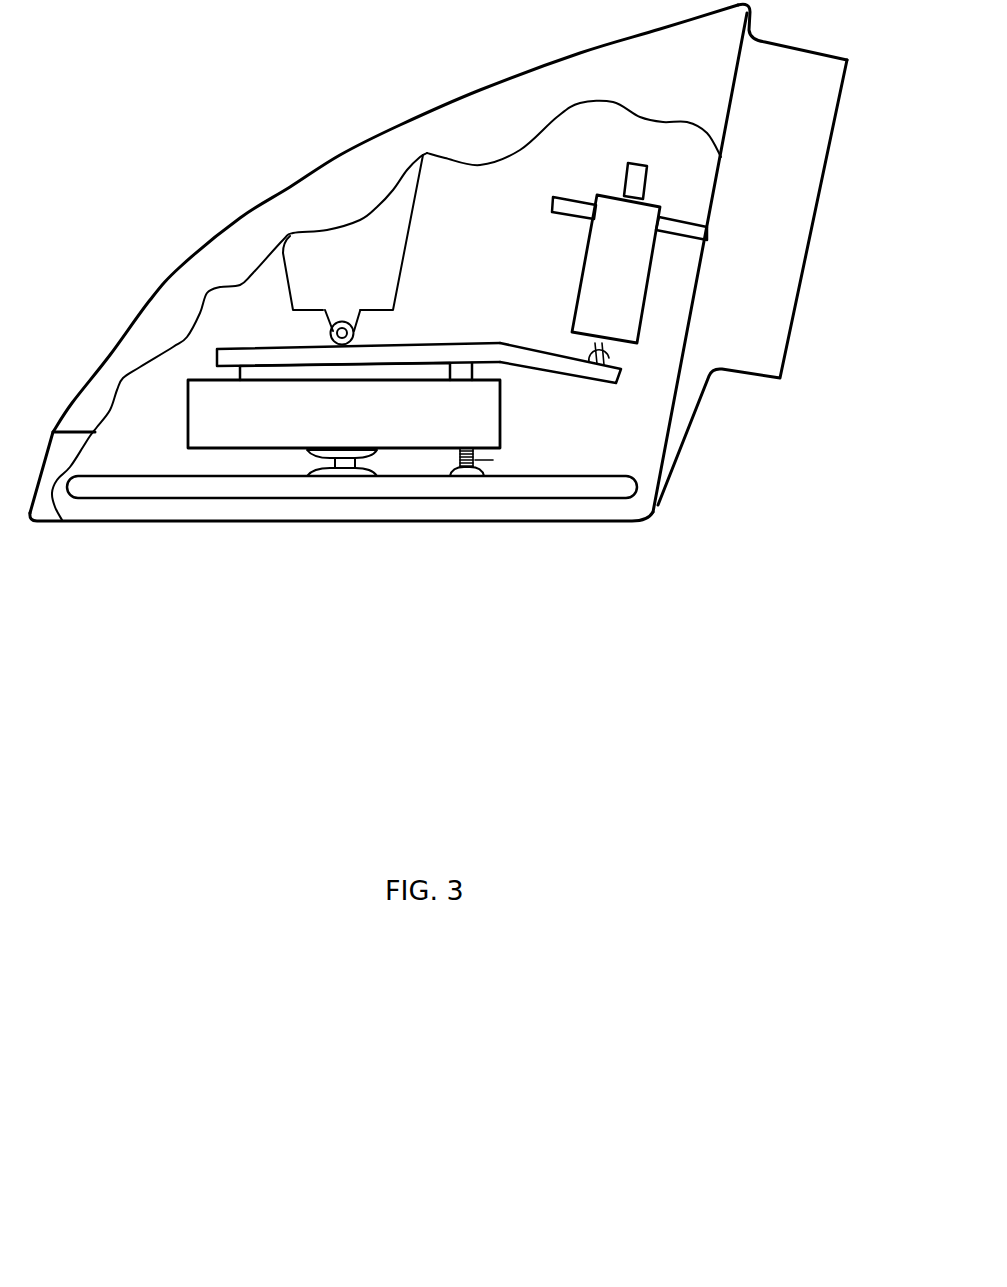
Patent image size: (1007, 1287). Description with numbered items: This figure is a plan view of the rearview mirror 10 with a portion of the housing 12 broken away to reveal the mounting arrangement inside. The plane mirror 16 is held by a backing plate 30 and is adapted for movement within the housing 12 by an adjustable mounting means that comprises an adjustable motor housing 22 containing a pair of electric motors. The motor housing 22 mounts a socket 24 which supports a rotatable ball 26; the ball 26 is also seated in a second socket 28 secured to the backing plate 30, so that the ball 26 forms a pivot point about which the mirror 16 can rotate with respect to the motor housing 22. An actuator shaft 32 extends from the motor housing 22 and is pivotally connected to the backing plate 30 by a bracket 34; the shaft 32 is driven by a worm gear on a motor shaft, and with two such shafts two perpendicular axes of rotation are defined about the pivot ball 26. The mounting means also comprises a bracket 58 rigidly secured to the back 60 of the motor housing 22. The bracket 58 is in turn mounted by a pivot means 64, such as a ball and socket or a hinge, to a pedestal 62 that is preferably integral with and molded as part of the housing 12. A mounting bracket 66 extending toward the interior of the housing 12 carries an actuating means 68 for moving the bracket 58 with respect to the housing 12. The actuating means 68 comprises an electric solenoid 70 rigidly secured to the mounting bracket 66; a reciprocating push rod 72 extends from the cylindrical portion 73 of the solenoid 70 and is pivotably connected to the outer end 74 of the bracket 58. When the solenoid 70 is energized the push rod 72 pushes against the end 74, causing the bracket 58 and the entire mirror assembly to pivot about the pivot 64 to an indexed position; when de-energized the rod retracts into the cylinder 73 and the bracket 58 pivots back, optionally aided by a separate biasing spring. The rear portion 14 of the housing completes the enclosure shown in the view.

The garment steamer/press appliance 10 is at (160, 103).
The housing 12 is at (590, 73).
The rear handle portion of housing 14 is at (775, 306).
The plane mirror 16 is at (228, 502).
The adjustable motor housing 22 is at (217, 413).
The socket 24 is at (337, 458).
The ball 26 is at (345, 462).
The second socket 28 is at (352, 472).
The backing plate 30 is at (597, 477).
The actuator shaft 32 is at (493, 460).
The bracket 34 is at (463, 472).
The bracket 58 is at (467, 352).
The back of the adjustable motor housing 60 is at (303, 377).
The pedestal 62 is at (315, 250).
The pivot means 64 is at (330, 331).
The mounting bracket 66 is at (553, 205).
The actuating means 68 is at (672, 273).
The electric solenoid 70 is at (568, 293).
The reciprocating push rod 72 is at (605, 350).
The cylindrical portion 73 is at (607, 250).
The outer end of the bracket 74 is at (555, 363).